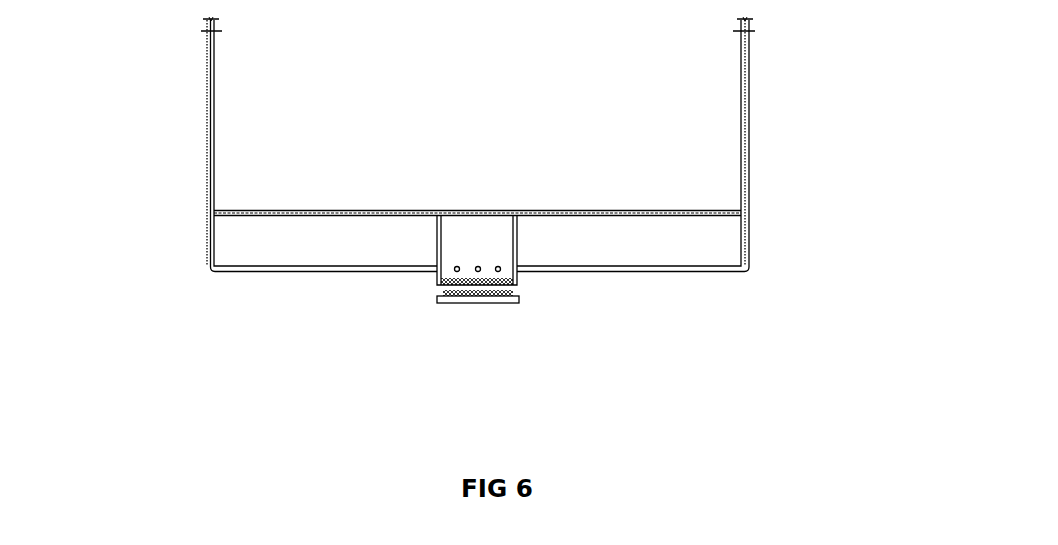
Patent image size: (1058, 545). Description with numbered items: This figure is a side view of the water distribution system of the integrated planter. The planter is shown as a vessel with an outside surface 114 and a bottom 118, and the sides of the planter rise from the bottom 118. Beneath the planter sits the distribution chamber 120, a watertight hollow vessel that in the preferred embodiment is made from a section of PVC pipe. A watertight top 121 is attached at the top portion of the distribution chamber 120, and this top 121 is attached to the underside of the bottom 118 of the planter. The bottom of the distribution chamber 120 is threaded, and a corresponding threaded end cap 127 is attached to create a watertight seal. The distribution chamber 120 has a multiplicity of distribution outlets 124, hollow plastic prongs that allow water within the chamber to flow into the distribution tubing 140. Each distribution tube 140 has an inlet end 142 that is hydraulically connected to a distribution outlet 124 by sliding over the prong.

The distribution tubing 140 is at (207, 73).
The outside surface 114 is at (207, 120).
The bottom 118 is at (300, 212).
The watertight top 121 is at (480, 211).
The distribution outlets 124 is at (453, 269).
The threaded end cap 127 is at (452, 300).
The distribution chamber 120 is at (473, 238).
The inlet end 142 is at (530, 268).